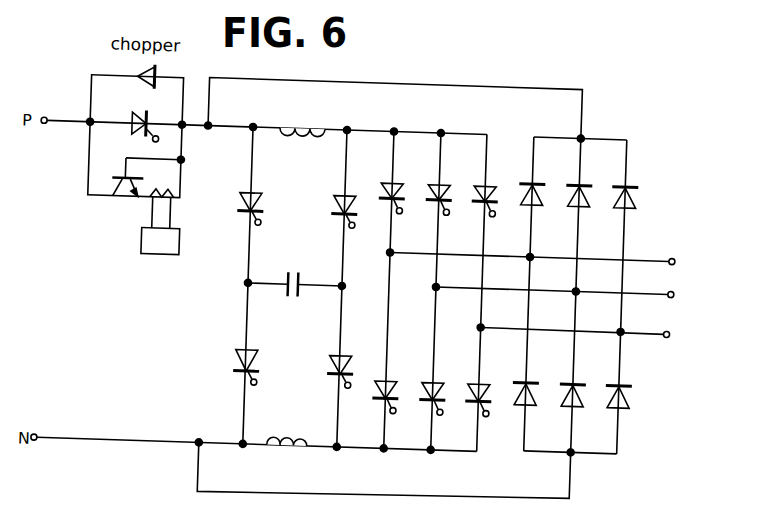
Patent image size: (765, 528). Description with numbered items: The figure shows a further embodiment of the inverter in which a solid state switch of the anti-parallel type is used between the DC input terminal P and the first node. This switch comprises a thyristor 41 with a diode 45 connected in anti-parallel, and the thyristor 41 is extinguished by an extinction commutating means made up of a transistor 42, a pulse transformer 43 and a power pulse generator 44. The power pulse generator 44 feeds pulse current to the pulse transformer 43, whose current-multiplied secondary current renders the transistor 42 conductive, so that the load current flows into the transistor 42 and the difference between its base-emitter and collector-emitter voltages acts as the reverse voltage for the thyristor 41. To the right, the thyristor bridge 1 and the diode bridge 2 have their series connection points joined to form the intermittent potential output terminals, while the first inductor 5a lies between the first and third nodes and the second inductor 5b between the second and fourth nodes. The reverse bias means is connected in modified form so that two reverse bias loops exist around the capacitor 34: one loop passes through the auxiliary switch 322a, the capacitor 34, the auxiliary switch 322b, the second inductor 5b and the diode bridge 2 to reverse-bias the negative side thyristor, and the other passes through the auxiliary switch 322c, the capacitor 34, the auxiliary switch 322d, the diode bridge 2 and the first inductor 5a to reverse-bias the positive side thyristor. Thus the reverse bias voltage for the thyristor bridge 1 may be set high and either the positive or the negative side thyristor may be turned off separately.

The diode 45 is at (134, 72).
The thyristor 41 is at (136, 117).
The transistor 42 is at (126, 194).
The pulse transformer 43 is at (180, 198).
The power pulse generator 44 is at (163, 258).
The auxiliary solid state switch 322a is at (227, 202).
The auxiliary solid state switch 322b is at (311, 363).
The auxiliary solid state switch 322c is at (342, 186).
The auxiliary solid state switch 322d is at (221, 359).
The capacitor 34 is at (295, 288).
The first inductor 5a is at (316, 115).
The second inductor 5b is at (287, 446).
The thyristor bridge 1 is at (437, 253).
The diode bridge 2 is at (577, 256).